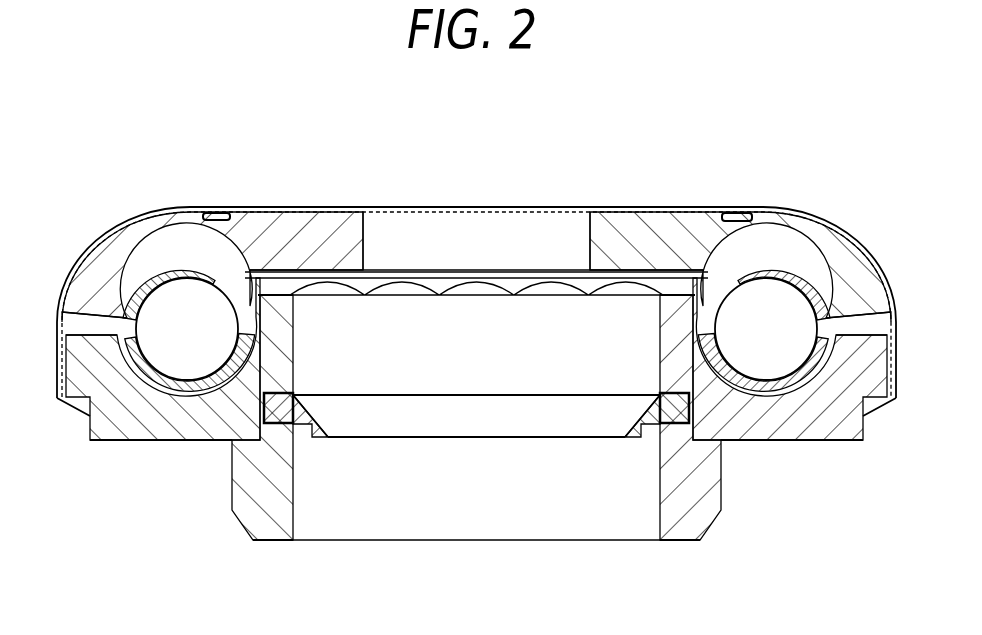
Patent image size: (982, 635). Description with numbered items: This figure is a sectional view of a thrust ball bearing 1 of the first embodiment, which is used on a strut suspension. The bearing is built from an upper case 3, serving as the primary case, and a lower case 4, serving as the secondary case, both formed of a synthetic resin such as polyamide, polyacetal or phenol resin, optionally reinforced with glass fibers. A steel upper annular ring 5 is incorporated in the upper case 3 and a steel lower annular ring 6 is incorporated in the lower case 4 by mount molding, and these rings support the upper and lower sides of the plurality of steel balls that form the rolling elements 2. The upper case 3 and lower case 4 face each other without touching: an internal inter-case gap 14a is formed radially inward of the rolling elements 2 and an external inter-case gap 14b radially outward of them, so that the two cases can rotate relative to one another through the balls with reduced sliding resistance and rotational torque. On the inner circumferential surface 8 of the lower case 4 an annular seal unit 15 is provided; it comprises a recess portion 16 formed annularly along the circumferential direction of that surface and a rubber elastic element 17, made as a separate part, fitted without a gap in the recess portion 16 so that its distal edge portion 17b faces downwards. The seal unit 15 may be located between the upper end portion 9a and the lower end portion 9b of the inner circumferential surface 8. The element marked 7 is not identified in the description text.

The thrust ball bearing 1 is at (718, 146).
The rolling elements 2 is at (153, 262).
The upper case 3 is at (345, 210).
The lower case 4 is at (182, 432).
The upper annular ring 5 is at (172, 300).
The lower annular ring 6 is at (128, 412).
The lens 7 is at (382, 240).
The inner circumferential surface 8 is at (297, 513).
The upper end portion 9a is at (258, 300).
The lower end portion 9b is at (267, 540).
The internal inter-case gap 14a is at (280, 286).
The external inter-case gap 14b is at (95, 322).
The seal unit 15 is at (165, 545).
The recess portion 16 is at (232, 440).
The rubber elastic element 17 is at (233, 503).
The distal edge portion 17b is at (316, 438).